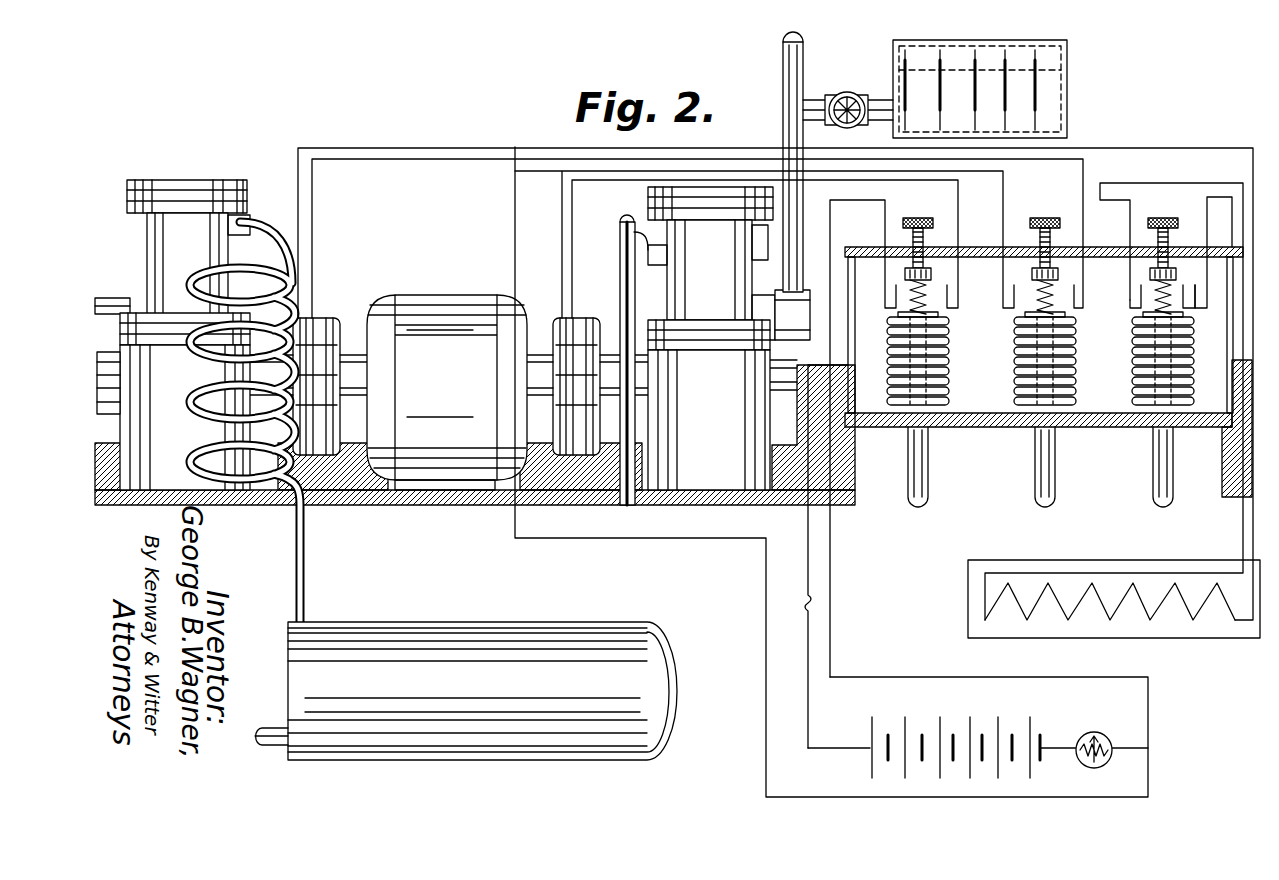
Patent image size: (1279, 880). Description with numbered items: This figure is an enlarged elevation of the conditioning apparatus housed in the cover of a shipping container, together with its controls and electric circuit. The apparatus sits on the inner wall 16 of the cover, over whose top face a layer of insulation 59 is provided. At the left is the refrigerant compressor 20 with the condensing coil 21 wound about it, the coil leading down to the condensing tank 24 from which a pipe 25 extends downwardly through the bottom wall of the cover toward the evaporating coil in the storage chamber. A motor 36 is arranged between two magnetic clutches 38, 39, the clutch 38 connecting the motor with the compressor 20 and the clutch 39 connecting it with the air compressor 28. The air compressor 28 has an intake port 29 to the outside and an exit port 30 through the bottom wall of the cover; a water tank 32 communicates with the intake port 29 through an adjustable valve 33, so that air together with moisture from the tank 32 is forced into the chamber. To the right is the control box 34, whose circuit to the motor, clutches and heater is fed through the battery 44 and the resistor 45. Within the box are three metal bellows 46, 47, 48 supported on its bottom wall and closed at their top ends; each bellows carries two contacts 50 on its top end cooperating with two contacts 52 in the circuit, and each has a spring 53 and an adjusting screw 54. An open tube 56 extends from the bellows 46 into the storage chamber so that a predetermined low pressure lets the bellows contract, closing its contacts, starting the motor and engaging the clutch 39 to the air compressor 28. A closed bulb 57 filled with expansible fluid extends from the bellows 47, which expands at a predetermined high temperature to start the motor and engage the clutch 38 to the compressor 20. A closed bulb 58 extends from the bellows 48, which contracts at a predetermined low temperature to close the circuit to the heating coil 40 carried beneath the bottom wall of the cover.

The inner wall 16 is at (366, 500).
The compressor 20 is at (172, 335).
The condensing coil 21 is at (200, 408).
The condensing tank 24 is at (403, 636).
The pipe 25 is at (268, 733).
The air compressor 28 is at (711, 338).
The intake port 29 is at (785, 62).
The exit port 30 is at (633, 505).
The water tank 32 is at (1050, 82).
The adjustable valve 33 is at (849, 100).
The control box 34 is at (855, 345).
The motor 36 is at (447, 392).
The magnetic clutch 38 is at (333, 404).
The magnetic clutch 39 is at (581, 404).
The heating coil 40 is at (1092, 582).
The battery 44 is at (953, 726).
The resistor 45 is at (1093, 732).
The metal bellows 46 is at (950, 356).
The metal bellows 47 is at (1076, 356).
The metal bellows 48 is at (1192, 360).
The contacts 50 is at (1186, 314).
The contacts 52 is at (1205, 272).
The spring 53 is at (1132, 316).
The adjusting screw 54 is at (1168, 222).
The open tube 56 is at (930, 452).
The closed tube or bulb 57 is at (1056, 452).
The closed tube or bulb 58 is at (1172, 462).
The insulation 59 is at (113, 470).